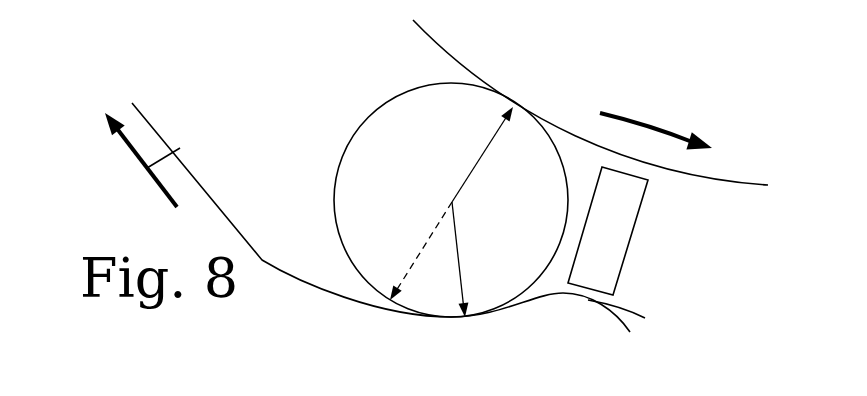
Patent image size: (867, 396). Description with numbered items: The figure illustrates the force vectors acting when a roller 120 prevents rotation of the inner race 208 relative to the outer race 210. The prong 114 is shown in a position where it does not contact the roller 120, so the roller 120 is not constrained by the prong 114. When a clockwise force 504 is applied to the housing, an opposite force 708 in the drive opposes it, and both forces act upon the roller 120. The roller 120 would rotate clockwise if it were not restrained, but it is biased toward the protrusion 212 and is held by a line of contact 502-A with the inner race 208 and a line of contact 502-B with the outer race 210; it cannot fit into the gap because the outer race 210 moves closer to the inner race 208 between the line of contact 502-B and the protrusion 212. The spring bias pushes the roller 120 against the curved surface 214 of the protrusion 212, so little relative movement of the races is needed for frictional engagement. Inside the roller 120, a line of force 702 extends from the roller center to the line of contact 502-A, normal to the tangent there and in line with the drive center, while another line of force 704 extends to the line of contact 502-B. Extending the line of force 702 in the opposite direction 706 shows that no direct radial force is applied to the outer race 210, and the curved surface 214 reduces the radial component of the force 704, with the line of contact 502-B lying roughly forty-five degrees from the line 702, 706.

The roller 120 is at (353, 133).
The inner race 208 is at (752, 188).
The outer race 210 is at (232, 215).
The curved surface 214 is at (503, 313).
The protrusion 212 is at (633, 316).
The prong 114 is at (627, 253).
The line of force 702 is at (482, 150).
The line of force 704 is at (462, 267).
The opposite direction 706 is at (422, 253).
The line of contact 502-A is at (515, 100).
The line of contact 502-B is at (467, 320).
The clockwise force 504 is at (178, 143).
The opposite force 708 is at (633, 123).